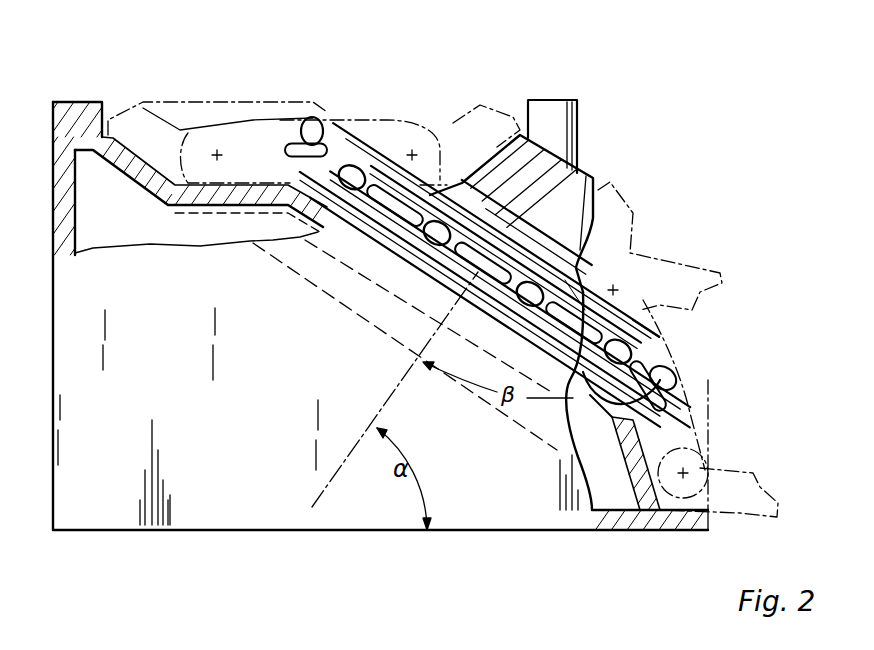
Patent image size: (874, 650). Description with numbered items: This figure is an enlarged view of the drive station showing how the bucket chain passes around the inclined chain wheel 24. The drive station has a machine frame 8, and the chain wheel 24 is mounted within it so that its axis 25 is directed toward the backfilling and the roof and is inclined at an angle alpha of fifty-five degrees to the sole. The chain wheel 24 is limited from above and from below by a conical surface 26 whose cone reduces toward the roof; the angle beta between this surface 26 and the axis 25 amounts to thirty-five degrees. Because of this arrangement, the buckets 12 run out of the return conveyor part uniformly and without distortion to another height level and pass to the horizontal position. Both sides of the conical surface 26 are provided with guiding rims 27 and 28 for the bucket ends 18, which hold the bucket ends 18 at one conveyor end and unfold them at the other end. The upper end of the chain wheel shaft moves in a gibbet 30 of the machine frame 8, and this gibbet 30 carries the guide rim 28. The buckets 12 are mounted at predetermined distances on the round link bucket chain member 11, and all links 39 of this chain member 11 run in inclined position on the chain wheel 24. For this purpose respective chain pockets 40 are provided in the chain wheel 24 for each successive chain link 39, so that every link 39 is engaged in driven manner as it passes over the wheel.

The machine frame 8 is at (207, 513).
The round link bucket chain member 11 is at (447, 277).
The buckets 12 is at (385, 143).
The bucket ends 18 is at (173, 140).
The chain wheel 24 is at (503, 328).
The axis 25 is at (395, 397).
The conical surface 26 is at (633, 430).
The guiding rim 27 is at (72, 130).
The guiding rim 28 is at (565, 225).
The gibbet 30 is at (588, 173).
The chain links 39 is at (433, 262).
The chain pockets 40 is at (585, 310).